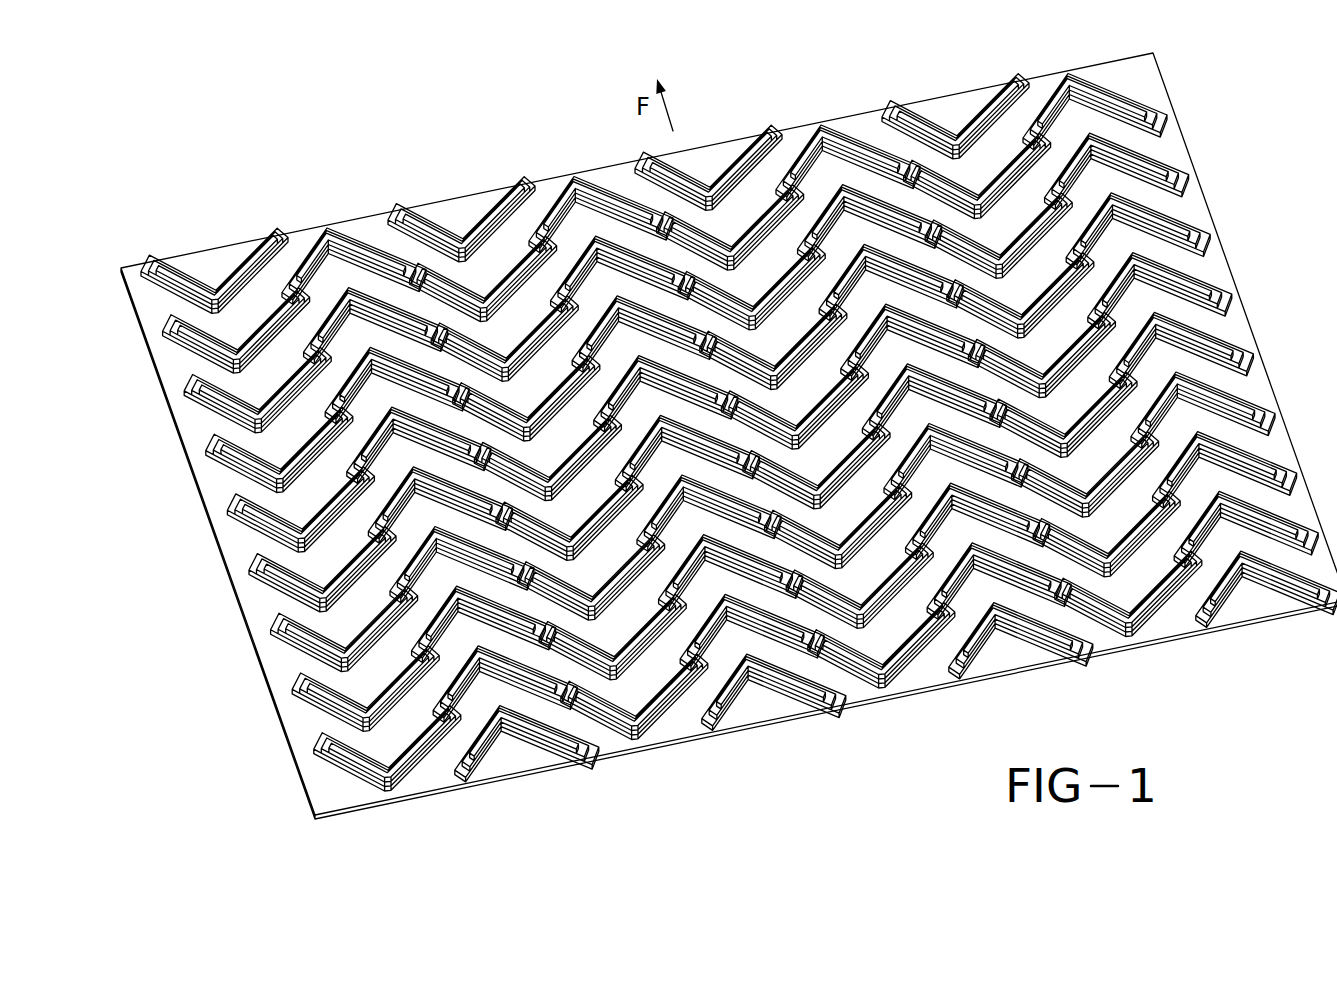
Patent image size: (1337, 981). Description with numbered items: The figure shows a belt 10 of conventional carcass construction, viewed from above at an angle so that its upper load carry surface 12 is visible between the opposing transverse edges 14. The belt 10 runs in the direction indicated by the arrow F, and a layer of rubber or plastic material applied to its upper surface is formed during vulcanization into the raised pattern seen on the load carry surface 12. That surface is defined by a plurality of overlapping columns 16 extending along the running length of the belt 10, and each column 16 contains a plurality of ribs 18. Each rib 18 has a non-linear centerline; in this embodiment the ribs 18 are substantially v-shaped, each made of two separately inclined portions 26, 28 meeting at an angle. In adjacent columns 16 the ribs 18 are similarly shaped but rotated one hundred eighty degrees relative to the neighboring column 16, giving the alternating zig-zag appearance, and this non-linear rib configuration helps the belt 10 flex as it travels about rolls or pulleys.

The belt 10 is at (1212, 136).
The load carry surface 12 is at (718, 168).
The transverse edges 14 is at (1228, 261).
The columns 16 is at (198, 222).
The ribs 18 is at (262, 255).
The inclined portion 26 is at (493, 760).
The inclined portion 28 is at (582, 755).